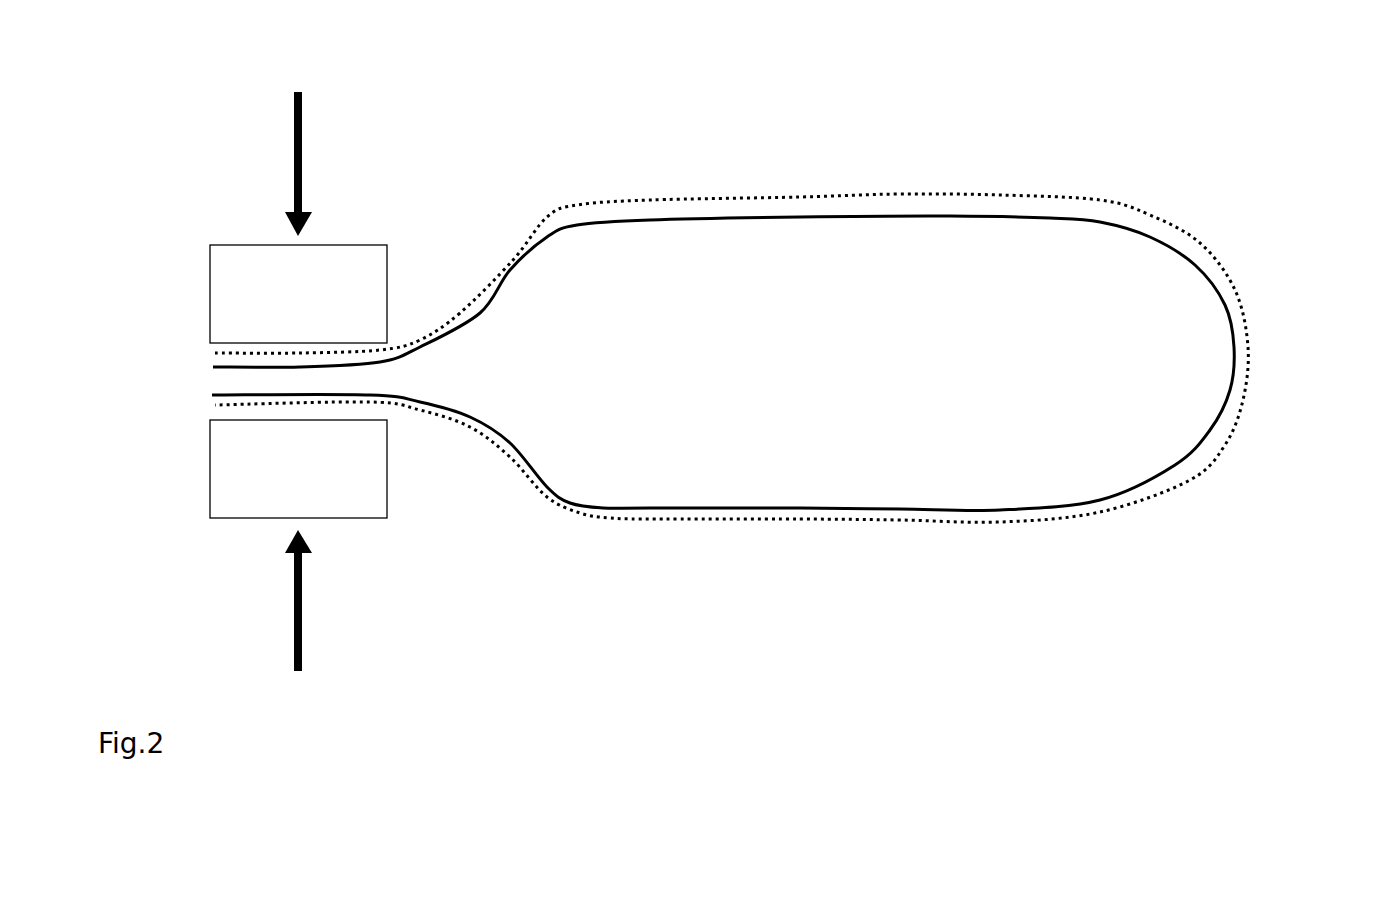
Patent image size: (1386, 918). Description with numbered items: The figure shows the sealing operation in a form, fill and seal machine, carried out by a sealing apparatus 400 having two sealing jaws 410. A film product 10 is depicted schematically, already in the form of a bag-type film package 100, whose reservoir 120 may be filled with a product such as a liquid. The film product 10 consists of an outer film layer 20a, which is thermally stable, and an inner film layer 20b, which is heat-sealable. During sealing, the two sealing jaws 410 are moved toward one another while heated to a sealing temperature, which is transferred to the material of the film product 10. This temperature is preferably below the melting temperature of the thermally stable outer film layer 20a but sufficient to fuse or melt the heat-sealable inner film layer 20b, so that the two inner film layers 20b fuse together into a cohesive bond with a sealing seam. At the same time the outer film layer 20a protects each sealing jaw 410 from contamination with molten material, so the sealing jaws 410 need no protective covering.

The film product 10 is at (730, 291).
The outer film layer 20a is at (712, 197).
The inner film layer 20b is at (660, 220).
The bag-type film package 100 is at (796, 291).
The reservoir 120 is at (954, 415).
The sealing apparatus 400 is at (379, 145).
The sealing jaw 410 is at (342, 270).